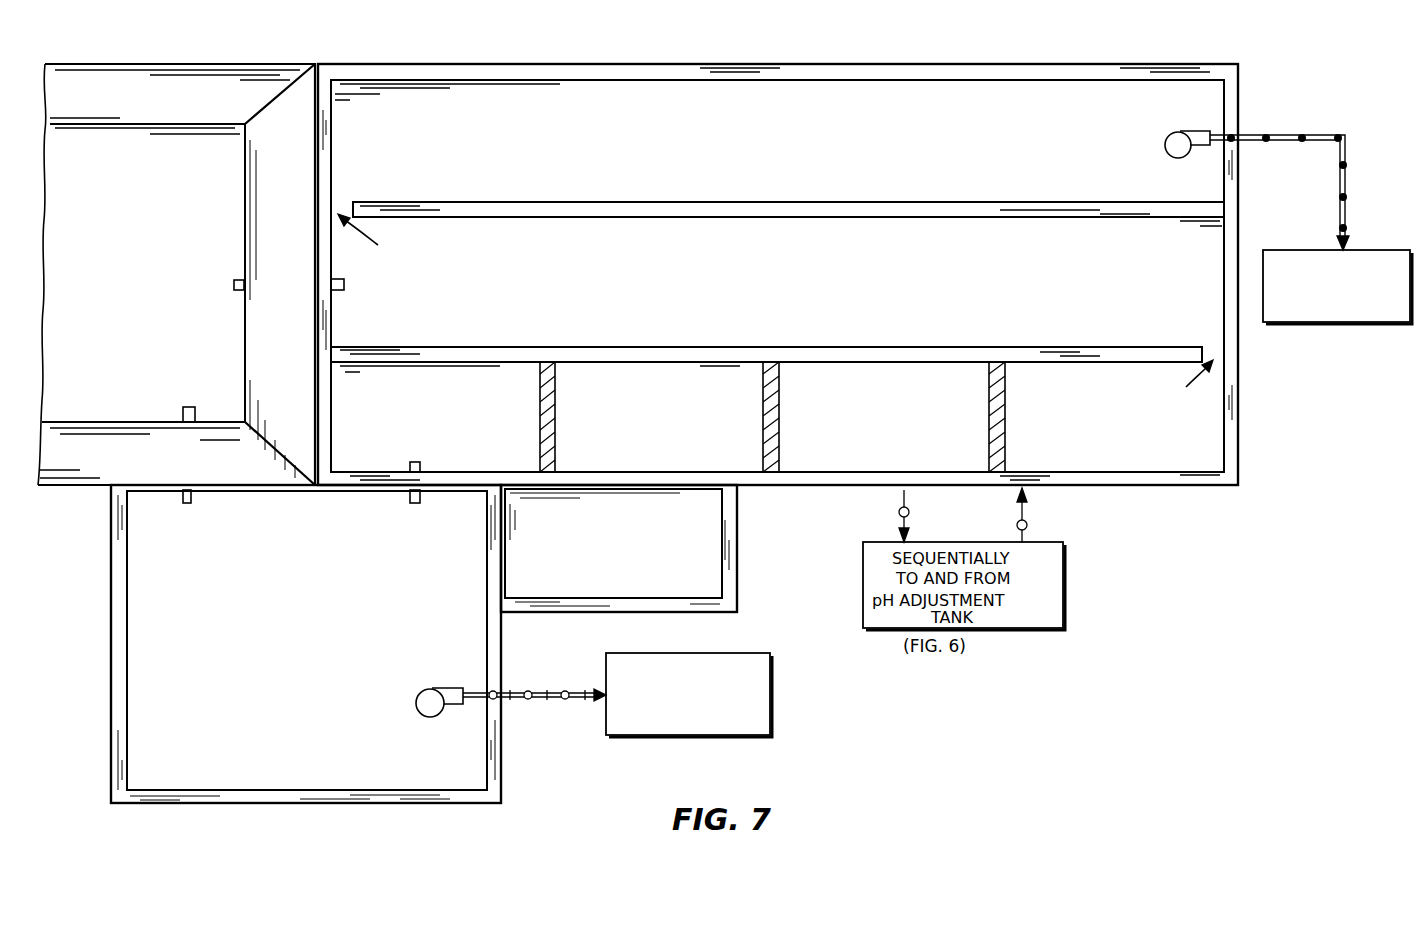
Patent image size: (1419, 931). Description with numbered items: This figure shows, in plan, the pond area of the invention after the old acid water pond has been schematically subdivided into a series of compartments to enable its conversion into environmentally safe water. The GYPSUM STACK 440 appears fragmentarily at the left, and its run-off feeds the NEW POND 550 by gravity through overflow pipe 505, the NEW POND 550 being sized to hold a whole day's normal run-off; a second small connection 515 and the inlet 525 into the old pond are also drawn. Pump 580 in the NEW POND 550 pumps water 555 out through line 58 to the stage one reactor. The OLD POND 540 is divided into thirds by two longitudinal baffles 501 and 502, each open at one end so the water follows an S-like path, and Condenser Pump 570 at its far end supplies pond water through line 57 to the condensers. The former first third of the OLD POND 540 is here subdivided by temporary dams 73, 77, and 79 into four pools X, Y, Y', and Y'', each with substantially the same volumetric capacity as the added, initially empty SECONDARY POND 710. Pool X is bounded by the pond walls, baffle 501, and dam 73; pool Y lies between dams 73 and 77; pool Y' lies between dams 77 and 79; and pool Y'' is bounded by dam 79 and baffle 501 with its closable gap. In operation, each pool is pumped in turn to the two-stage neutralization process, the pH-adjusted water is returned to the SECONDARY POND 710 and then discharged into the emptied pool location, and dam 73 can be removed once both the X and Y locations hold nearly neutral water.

The gypsum stack 440 is at (197, 64).
The old pond 540 is at (752, 64).
The longitudinal baffle 502 is at (600, 202).
The longitudinal baffle 501 is at (1081, 347).
The temporary dam 73 is at (555, 410).
The temporary dam 77 is at (779, 408).
The temporary dam 79 is at (993, 418).
The inlet from gypsum stack to old pond 525 is at (234, 282).
The overflow pipe 505 is at (204, 378).
The outlet from compartment X to new pond 515 is at (420, 462).
The condenser pump 570 is at (1166, 150).
The conduit to condensers 57 is at (1320, 136).
The new pond 550 is at (501, 805).
The water 555 is at (307, 640).
The pump 580 is at (436, 717).
The conduit to stage I reactor 58 is at (556, 700).
The secondary pond 710 is at (737, 585).